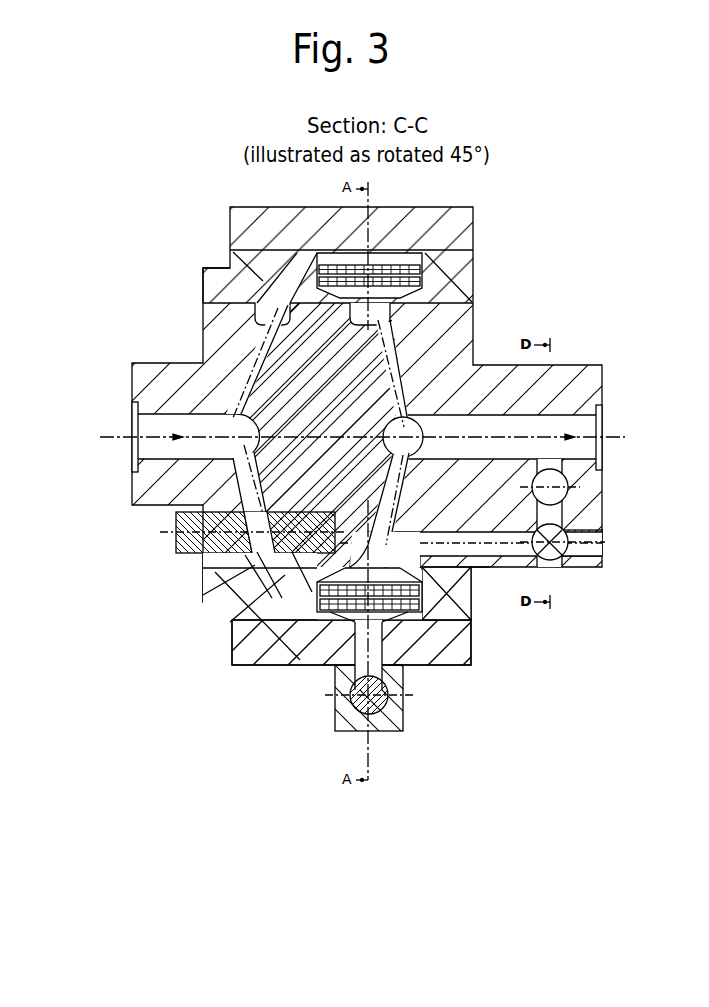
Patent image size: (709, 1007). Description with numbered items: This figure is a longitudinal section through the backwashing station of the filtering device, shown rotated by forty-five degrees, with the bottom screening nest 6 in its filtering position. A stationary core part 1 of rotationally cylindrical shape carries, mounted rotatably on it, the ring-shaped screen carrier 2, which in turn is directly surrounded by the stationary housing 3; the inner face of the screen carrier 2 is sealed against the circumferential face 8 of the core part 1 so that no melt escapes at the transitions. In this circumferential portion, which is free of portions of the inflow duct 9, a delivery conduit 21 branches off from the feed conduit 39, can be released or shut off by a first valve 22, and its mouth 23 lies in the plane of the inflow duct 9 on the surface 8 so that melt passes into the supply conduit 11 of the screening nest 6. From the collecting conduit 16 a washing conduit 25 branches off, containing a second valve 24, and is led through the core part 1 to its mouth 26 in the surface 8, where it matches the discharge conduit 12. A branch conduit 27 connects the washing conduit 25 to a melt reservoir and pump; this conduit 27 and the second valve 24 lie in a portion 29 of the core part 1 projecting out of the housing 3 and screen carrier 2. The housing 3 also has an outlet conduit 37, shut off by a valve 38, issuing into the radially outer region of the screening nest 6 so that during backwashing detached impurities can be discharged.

The core part 1 is at (458, 337).
The screen carrier 2 is at (462, 288).
The housing 3 is at (462, 248).
The screening nest 6 is at (472, 657).
The circumferential face of the core part 8 is at (450, 575).
The inflow duct 9 is at (205, 280).
The supply conduit 11 is at (282, 636).
The discharge conduit 12 is at (498, 562).
The collecting conduit 16 is at (520, 425).
The delivery conduit 21 is at (255, 458).
The first valve 22 is at (190, 555).
The mouth of the delivery conduit 23 is at (233, 600).
The second valve 24 is at (563, 482).
The washing conduit 25 is at (572, 511).
The mouth of the washing conduit 26 is at (403, 540).
The branch conduit 27 is at (572, 562).
The portion of the core part 29 is at (561, 322).
The outlet conduit 37 is at (404, 666).
The valve 38 is at (365, 733).
The feed conduit 39 is at (180, 437).